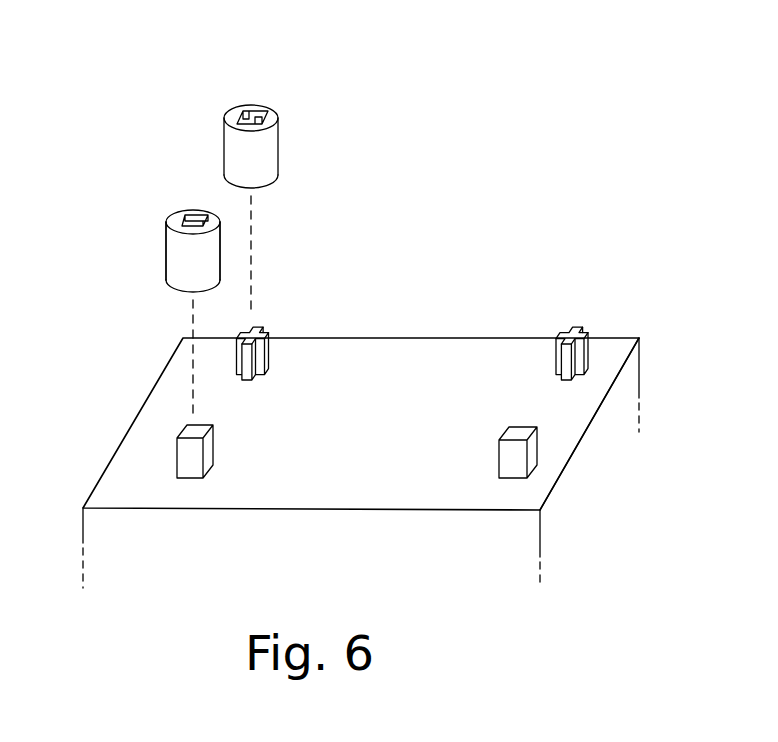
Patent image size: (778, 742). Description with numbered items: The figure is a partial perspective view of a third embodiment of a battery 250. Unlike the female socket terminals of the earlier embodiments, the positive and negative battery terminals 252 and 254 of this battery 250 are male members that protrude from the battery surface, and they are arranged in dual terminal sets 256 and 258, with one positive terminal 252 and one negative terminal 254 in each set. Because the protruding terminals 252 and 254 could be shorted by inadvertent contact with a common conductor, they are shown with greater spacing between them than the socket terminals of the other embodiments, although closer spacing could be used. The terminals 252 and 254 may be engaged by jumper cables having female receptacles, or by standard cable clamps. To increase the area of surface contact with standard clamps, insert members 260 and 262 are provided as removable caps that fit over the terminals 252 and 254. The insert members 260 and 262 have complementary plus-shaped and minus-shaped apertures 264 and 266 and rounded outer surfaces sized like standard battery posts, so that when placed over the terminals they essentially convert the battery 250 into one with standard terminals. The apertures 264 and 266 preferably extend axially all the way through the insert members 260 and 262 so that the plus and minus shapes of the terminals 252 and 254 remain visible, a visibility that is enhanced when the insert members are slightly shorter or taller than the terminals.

The battery 250 is at (546, 100).
The positive battery terminal 252 is at (273, 353).
The negative battery terminal 254 is at (193, 467).
The dual terminal set 256 is at (175, 405).
The dual terminal set 258 is at (555, 438).
The insert member 260 is at (278, 147).
The insert member 262 is at (168, 252).
The "+"-shaped aperture 264 is at (256, 112).
The "−"-shaped aperture 266 is at (198, 222).